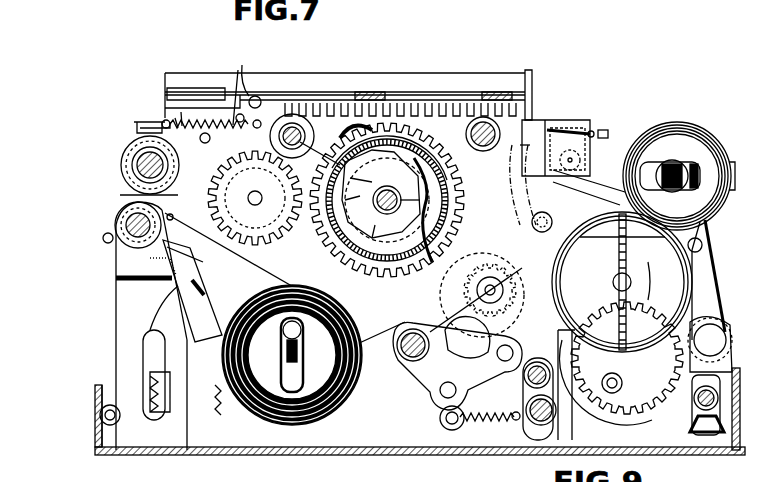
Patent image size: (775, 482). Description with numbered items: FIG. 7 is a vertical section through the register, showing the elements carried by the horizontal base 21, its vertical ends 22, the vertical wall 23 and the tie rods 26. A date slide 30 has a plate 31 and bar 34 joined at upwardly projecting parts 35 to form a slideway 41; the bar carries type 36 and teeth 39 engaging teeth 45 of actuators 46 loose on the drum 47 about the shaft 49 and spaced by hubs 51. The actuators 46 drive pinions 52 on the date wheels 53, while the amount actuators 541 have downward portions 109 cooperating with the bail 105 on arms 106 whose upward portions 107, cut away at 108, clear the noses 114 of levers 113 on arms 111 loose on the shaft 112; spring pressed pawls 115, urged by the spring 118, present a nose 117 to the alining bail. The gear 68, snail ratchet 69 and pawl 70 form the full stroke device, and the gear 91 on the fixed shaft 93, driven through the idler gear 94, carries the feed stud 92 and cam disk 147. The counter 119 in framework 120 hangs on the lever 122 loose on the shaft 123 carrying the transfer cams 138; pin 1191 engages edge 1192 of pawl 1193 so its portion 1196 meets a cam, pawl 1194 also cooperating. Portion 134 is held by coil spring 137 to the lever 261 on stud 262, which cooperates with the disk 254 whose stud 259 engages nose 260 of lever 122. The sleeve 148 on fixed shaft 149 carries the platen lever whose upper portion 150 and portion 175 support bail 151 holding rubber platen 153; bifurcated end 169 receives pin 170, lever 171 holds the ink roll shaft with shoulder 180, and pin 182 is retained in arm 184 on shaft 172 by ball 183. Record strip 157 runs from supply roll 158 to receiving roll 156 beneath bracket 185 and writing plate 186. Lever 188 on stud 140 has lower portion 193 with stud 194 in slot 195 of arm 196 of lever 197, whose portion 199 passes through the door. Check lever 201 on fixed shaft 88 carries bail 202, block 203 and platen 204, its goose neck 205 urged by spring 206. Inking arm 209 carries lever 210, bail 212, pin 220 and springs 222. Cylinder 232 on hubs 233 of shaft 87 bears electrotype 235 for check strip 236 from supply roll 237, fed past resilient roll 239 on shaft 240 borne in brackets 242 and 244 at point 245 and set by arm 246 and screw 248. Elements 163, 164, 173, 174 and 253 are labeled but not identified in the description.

The horizontal base 21 is at (385, 452).
The vertical end portion 22 is at (97, 440).
The vertical wall 23 is at (108, 358).
The tie rod 26 is at (152, 122).
The settable slide 30 is at (530, 82).
The plate 31 is at (210, 73).
The bar 34 is at (532, 96).
The upwardly projecting part 35 is at (165, 118).
The type 36 is at (465, 120).
The teeth 39 is at (335, 80).
The slideway 41 is at (440, 92).
The actuator teeth 45 is at (405, 82).
The actuator 46 is at (428, 120).
The hollow hub or drum 47 is at (387, 240).
The shaft 49 is at (408, 200).
The hub 51 is at (473, 134).
The pinion 52 is at (280, 232).
The date wheel 53 is at (235, 248).
The gear 68 is at (600, 200).
The snail ratchet 69 is at (523, 185).
The pawl 70 is at (645, 195).
The shaft 87 is at (121, 163).
The fixed shaft 88 is at (292, 355).
The gear 91 is at (642, 410).
The stud 92 is at (618, 380).
The fixed shaft 93 is at (600, 378).
The idler gear 94 is at (345, 275).
The bail 105 is at (360, 215).
The arm 106 is at (372, 228).
The upwardly extending portion 107 is at (370, 180).
The cut away point 108 is at (395, 145).
The downwardly projecting portion 109 is at (405, 240).
The arm 111 is at (262, 185).
The shaft 112 is at (305, 136).
The lever 113 is at (340, 82).
The nose 114 is at (358, 127).
The spring pressed pawl 115 is at (280, 100).
The nose 117 is at (272, 73).
The spring 118 is at (168, 120).
The counter 119 is at (236, 112).
The framework 120 is at (432, 395).
The lever 122 is at (388, 385).
The shaft 123 is at (422, 372).
The downwardly extending portion 134 is at (290, 452).
The coil spring 137 is at (240, 450).
The cam 138 is at (400, 305).
The stud 140 is at (726, 338).
The disk 147 is at (612, 418).
The sleeve 148 is at (712, 148).
The fixed shaft 149 is at (672, 160).
The upper portion 150 is at (632, 140).
The bail 151 is at (556, 139).
The rubber platen 153 is at (535, 118).
The receiving roll 156 is at (712, 270).
The record strip 157 is at (670, 118).
The supply roll 158 is at (688, 125).
The arm end 163 is at (718, 240).
The pivot 164 is at (703, 248).
The bifurcated end 169 is at (585, 152).
The pin 170 is at (580, 165).
The lever 171 is at (559, 360).
The shaft 172 is at (552, 452).
The ring bar 173 is at (568, 276).
The pivot 174 is at (529, 218).
The portion 175 is at (565, 262).
The shoulder 180 is at (495, 120).
The pin 182 is at (535, 382).
The spring pressed ball 183 is at (602, 383).
The arm 184 is at (512, 450).
The angular bracket 185 is at (580, 126).
The plate 186 is at (606, 130).
The lever 188 is at (718, 292).
The lower portion 193 is at (735, 368).
The stud 194 is at (720, 395).
The slot 195 is at (515, 285).
The vertically extended arm 196 is at (680, 452).
The lever 197 is at (728, 432).
The portion 199 is at (700, 452).
The lever 201 is at (240, 284).
The bail 202 is at (209, 284).
The block 203 is at (116, 320).
The platen 204 is at (190, 246).
The goose neck portion 205 is at (268, 265).
The coil spring 206 is at (228, 405).
The arm 209 is at (310, 82).
The lever 210 is at (200, 138).
The bail 212 is at (172, 220).
The pin 220 is at (176, 118).
The spring 222 is at (248, 83).
The cylinder 232 is at (122, 154).
The hub 233 is at (122, 176).
The electrotype 235 is at (124, 138).
The check strip 236 is at (118, 196).
The supply roll 237 is at (330, 415).
The resilient roll 239 is at (116, 214).
The shaft 240 is at (116, 268).
The bracket 242 is at (134, 124).
The vertically extending bracket 244 is at (118, 295).
The point 245 is at (145, 452).
The arm 246 is at (116, 250).
The screw 248 is at (104, 238).
The edge 253 is at (170, 300).
The disk 254 is at (197, 296).
The stud 259 is at (143, 346).
The nose 260 is at (150, 370).
The lever 261 is at (100, 447).
The stud 262 is at (100, 417).
The actuator 541 is at (432, 210).
The pin 1191 is at (512, 305).
The edge 1192 is at (480, 280).
The pawl 1193 is at (480, 342).
The pawl 1194 is at (495, 422).
The portion 1196 is at (470, 301).